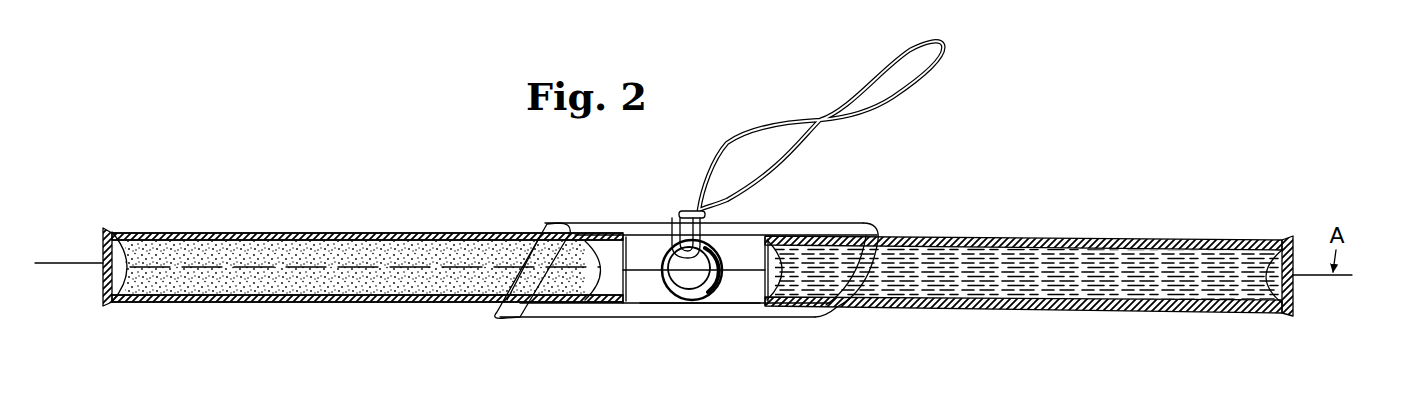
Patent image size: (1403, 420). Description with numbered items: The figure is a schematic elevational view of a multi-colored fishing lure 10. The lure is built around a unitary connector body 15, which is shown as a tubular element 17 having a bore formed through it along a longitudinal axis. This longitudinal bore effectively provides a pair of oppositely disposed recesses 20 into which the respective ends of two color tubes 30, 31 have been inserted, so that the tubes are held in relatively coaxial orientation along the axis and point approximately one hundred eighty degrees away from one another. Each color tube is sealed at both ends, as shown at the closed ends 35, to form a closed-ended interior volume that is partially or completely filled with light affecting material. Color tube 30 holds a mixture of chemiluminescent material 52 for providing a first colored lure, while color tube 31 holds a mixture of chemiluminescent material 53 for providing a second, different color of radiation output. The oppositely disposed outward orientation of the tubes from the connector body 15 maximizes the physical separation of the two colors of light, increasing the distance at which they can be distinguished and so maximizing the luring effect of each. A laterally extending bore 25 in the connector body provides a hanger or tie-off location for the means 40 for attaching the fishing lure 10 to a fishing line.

The fishing lure 10 is at (527, 212).
The connector body 15 is at (831, 214).
The tubular element 17 is at (592, 232).
The recesses 20 is at (740, 300).
The laterally extending bore 25 is at (688, 283).
The color tube 30 is at (1007, 240).
The color tube 31 is at (160, 230).
The closed ends 35 is at (627, 243).
The means for attaching 40 is at (791, 119).
The chemiluminescent material 52 is at (1148, 262).
The chemiluminescent material 53 is at (260, 272).